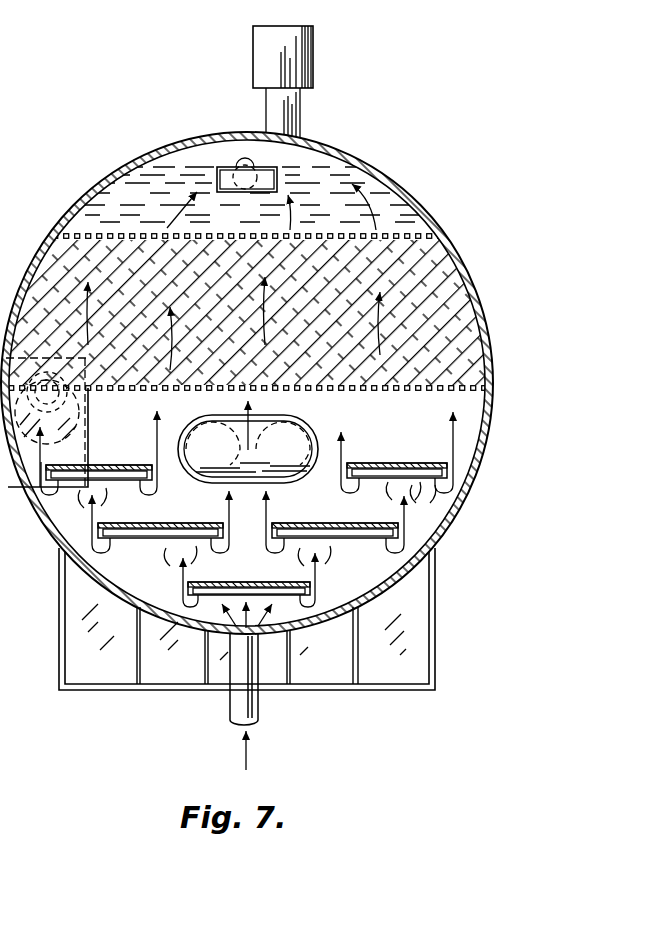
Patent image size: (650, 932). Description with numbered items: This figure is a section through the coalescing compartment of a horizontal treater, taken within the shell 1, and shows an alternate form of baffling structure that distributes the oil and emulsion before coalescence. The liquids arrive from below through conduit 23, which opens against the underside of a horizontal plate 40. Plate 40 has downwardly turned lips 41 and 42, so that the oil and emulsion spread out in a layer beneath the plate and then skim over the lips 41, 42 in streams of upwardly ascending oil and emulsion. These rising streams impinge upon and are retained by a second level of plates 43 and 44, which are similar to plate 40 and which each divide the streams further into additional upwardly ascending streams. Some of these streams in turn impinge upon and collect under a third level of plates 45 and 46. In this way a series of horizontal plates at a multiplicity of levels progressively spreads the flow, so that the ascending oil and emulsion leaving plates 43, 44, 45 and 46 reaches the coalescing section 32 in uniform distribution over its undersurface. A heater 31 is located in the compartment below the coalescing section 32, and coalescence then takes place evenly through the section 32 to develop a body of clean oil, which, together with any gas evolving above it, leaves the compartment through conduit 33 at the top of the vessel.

The shell 1 is at (493, 367).
The conduit 23 is at (259, 702).
The heater 31 is at (284, 424).
The coalescing section 32 is at (450, 313).
The conduit 33 is at (244, 158).
The plate 40 is at (225, 582).
The lip 41 is at (306, 590).
The lip 42 is at (192, 592).
The plate 43 is at (150, 523).
The plate 44 is at (316, 523).
The plate 45 is at (93, 465).
The plate 46 is at (371, 463).